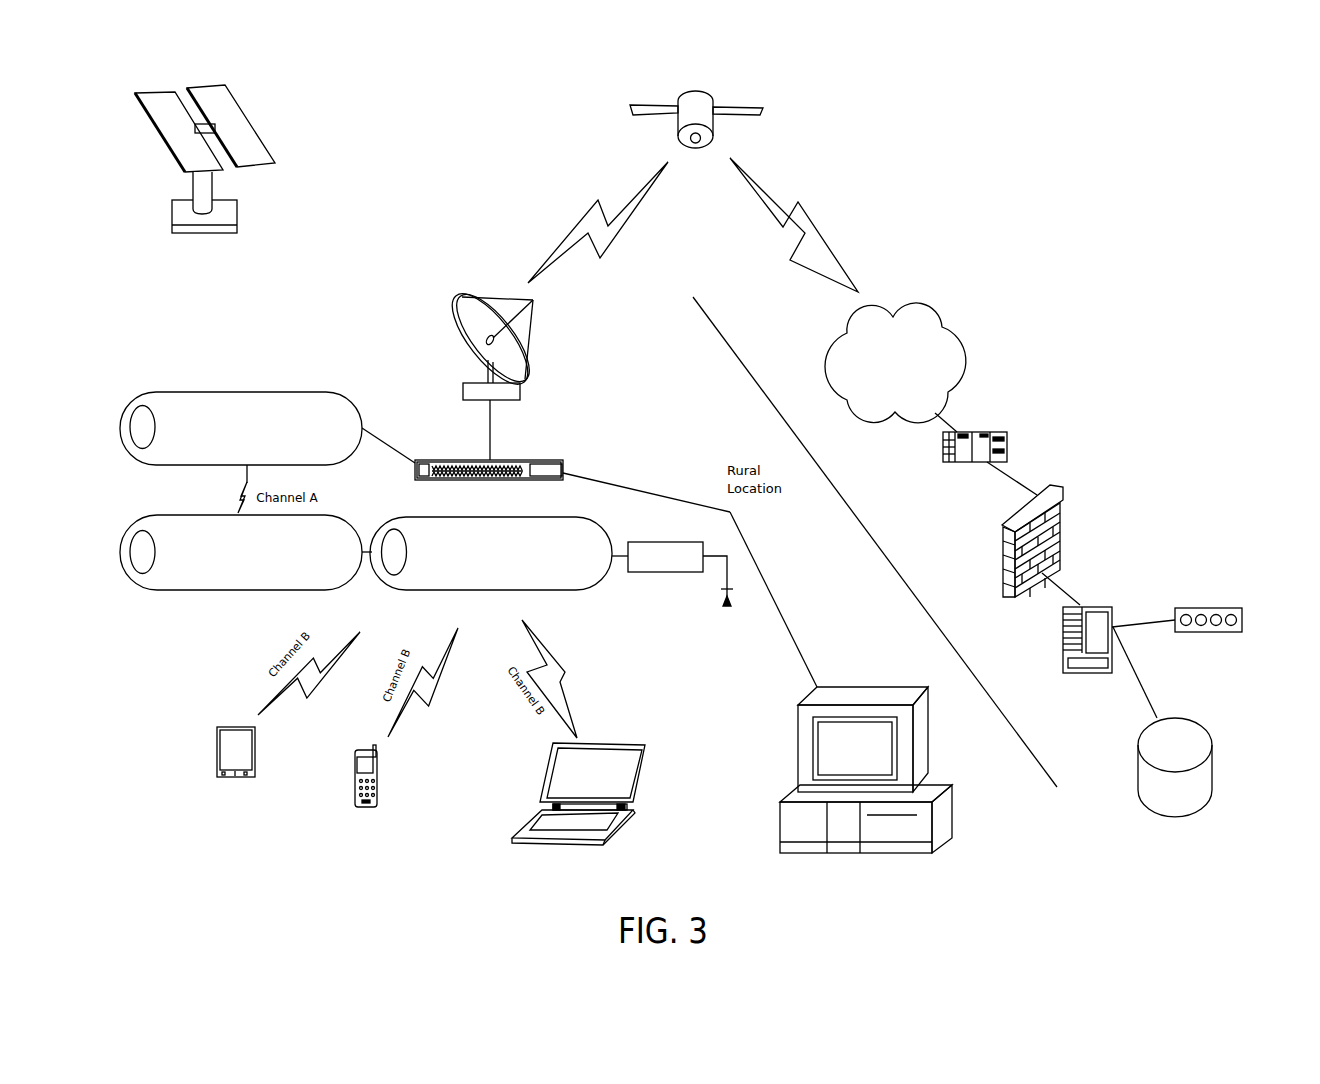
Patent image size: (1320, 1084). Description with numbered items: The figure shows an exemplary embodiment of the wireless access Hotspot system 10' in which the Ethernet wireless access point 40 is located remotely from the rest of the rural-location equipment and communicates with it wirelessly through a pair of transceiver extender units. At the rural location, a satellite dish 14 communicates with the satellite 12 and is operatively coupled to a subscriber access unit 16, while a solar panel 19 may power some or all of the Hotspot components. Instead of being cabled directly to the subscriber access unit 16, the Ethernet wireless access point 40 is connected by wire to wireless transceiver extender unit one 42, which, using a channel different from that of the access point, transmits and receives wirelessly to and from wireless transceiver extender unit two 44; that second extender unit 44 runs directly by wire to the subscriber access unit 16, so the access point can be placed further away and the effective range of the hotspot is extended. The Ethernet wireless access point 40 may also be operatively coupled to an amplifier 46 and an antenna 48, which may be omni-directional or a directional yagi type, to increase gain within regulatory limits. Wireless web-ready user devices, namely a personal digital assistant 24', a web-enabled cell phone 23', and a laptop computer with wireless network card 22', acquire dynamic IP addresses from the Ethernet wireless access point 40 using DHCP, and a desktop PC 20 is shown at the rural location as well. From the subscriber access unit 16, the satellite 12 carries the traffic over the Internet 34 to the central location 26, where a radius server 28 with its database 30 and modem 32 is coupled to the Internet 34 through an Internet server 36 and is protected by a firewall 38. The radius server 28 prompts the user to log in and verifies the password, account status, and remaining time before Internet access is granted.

The wireless access Hotspot system 10' is at (414, 142).
The satellite 12 is at (713, 122).
The satellite dish 14 is at (463, 383).
The subscriber access unit 16 is at (563, 460).
The solar panel 19 is at (203, 234).
The PC 20 is at (853, 687).
The laptop computer with wireless network card 22' is at (593, 804).
The web-enabled cell phone 23' is at (395, 787).
The personal digital assistant 24' is at (218, 738).
The central location 26 is at (1062, 339).
The radius server 28 is at (1105, 607).
The database 30 is at (1212, 770).
The modem 32 is at (1208, 608).
The Internet 34 is at (942, 327).
The Internet server 36 is at (1007, 441).
The firewall 38 is at (1063, 495).
The Ethernet wireless access point 40 is at (583, 590).
The wireless transceiver extender unit 1 42 is at (352, 522).
The wireless transceiver extender unit 2 44 is at (318, 392).
The amplifier 46 is at (665, 572).
The antenna 48 is at (727, 606).